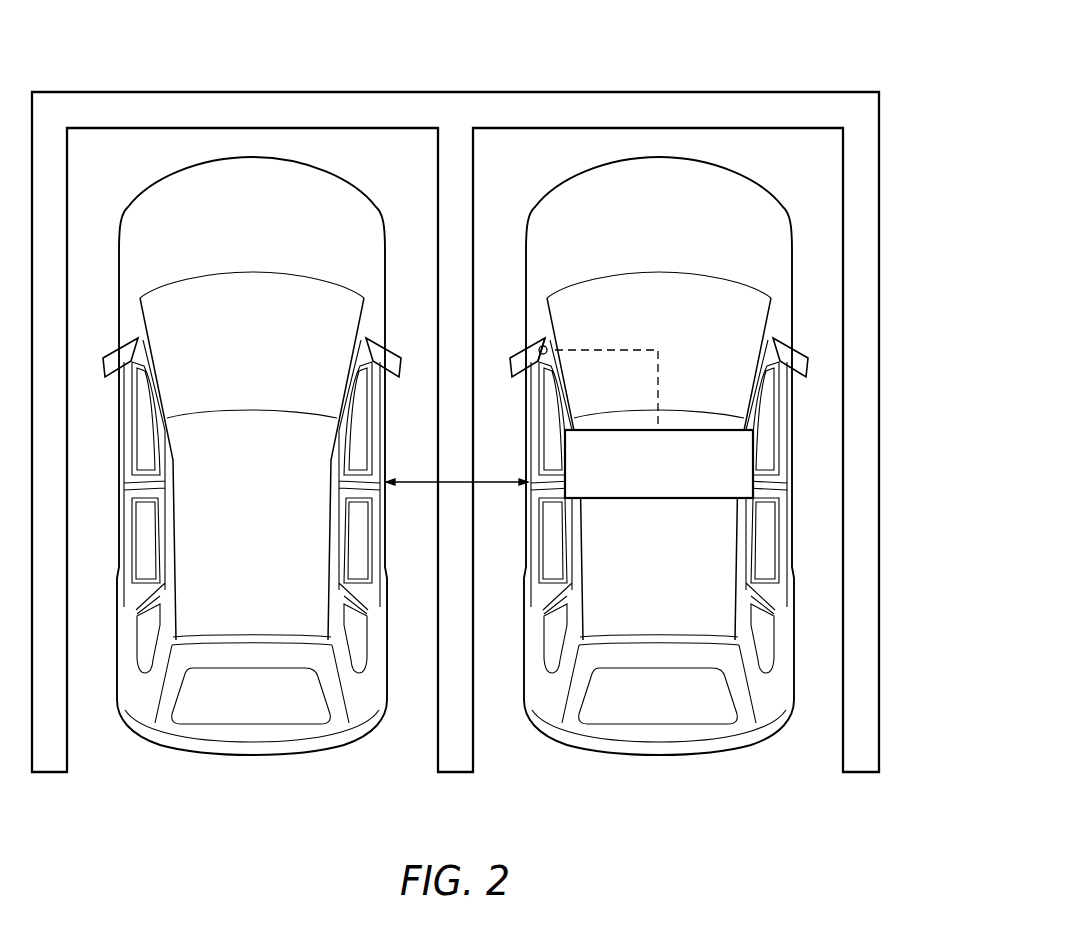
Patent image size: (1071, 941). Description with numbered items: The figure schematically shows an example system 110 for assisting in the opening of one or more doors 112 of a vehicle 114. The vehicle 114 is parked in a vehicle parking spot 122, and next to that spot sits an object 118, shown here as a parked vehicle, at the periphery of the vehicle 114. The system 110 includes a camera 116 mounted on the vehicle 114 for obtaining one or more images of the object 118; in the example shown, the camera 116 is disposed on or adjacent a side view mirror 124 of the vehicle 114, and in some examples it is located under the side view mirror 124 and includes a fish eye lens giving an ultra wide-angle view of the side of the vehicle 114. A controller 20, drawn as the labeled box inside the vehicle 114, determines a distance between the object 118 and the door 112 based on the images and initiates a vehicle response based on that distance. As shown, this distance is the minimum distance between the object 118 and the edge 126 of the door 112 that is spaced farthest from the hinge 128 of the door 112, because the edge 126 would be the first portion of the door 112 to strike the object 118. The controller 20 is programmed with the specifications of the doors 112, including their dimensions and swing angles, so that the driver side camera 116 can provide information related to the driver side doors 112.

The system 110 is at (823, 400).
The door 112 is at (542, 442).
The vehicle 114 is at (770, 248).
The camera 116 is at (548, 352).
The object 118 is at (243, 197).
The vehicle parking spot 122 is at (763, 162).
The side view mirror 124 is at (513, 358).
The edge of the door 126 is at (530, 484).
The hinge 128 is at (539, 345).
The controller 20 is at (703, 430).